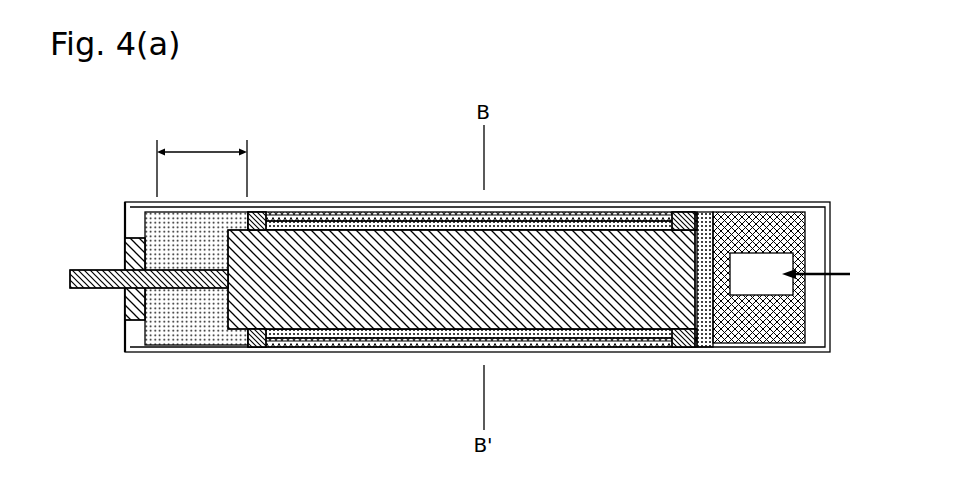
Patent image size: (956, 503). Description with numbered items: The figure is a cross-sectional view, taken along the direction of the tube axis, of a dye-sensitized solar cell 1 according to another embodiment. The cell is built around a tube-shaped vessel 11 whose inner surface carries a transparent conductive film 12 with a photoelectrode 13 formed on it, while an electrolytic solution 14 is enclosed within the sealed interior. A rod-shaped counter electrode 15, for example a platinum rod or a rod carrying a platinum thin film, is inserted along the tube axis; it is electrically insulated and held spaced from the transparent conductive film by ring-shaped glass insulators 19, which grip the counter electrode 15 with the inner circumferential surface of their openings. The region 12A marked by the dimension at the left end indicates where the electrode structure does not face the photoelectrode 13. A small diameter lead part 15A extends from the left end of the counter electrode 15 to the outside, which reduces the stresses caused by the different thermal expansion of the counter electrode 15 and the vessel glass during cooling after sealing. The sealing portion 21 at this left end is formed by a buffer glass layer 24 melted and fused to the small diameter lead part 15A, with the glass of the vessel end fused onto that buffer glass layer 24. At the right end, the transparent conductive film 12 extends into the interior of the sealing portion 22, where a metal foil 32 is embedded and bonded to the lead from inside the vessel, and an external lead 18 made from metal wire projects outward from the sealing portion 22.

The battery 1 is at (460, 277).
The tube-shaped vessel 11 is at (305, 201).
The transparent conductive film 12 is at (413, 347).
The non-facing region 12A is at (202, 168).
The photoelectrode 13 is at (636, 346).
The electrolytic solution 14 is at (574, 345).
The counter electrode 15 is at (358, 306).
The small diameter lead part 15A is at (92, 290).
The external lead 18 is at (838, 282).
The insulator 19 is at (265, 348).
The sealing portion 21 is at (119, 216).
The sealing portion 22 is at (737, 218).
The buffer glass layer 24 is at (133, 296).
The metal foil 32 is at (746, 272).